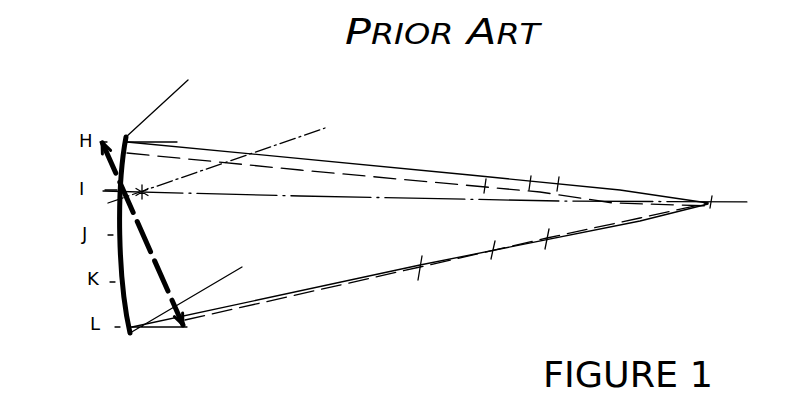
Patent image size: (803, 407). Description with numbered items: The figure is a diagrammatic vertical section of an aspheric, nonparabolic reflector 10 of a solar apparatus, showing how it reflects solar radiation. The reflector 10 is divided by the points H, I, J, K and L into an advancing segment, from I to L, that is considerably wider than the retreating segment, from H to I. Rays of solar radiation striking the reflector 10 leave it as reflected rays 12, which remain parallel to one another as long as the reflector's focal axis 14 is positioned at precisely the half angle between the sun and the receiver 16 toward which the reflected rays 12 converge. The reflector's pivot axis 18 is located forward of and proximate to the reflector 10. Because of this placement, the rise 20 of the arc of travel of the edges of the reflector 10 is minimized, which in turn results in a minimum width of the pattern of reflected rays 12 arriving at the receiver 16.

The reflector 10 is at (119, 257).
The reflected rays 12 is at (410, 168).
The focal axis 14 is at (300, 136).
The receiver 16 is at (712, 201).
The pivot axis 18 is at (146, 198).
The rise 20 is at (533, 178).